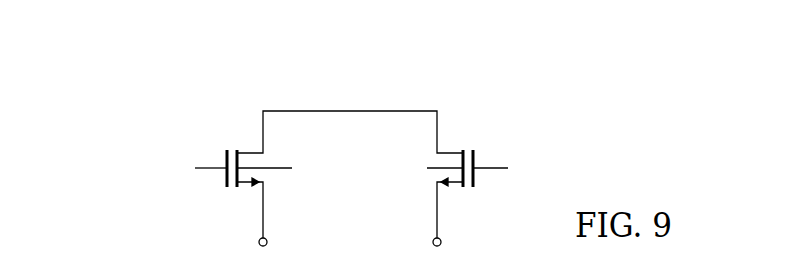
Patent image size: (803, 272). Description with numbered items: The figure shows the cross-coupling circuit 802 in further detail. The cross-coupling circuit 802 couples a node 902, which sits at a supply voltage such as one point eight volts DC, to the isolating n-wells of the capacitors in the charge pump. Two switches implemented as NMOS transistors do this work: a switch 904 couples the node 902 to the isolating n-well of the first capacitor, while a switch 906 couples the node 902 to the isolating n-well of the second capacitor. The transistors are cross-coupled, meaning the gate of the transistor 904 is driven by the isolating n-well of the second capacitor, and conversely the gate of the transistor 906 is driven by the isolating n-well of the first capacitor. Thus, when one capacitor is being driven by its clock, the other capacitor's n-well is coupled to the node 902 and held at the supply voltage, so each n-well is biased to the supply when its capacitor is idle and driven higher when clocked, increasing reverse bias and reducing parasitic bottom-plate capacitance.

The cross-coupling circuit 802 is at (248, 55).
The node 902 is at (400, 110).
The switch 904 is at (223, 160).
The switch 906 is at (481, 160).